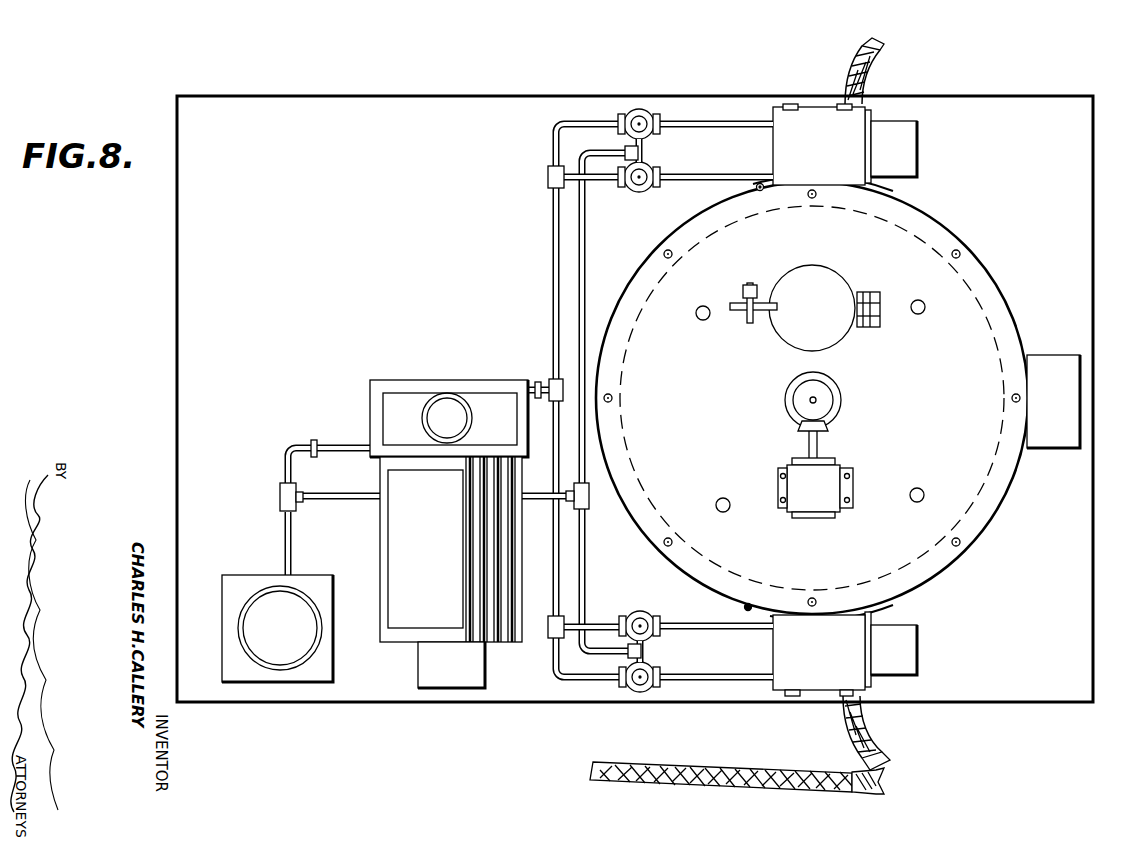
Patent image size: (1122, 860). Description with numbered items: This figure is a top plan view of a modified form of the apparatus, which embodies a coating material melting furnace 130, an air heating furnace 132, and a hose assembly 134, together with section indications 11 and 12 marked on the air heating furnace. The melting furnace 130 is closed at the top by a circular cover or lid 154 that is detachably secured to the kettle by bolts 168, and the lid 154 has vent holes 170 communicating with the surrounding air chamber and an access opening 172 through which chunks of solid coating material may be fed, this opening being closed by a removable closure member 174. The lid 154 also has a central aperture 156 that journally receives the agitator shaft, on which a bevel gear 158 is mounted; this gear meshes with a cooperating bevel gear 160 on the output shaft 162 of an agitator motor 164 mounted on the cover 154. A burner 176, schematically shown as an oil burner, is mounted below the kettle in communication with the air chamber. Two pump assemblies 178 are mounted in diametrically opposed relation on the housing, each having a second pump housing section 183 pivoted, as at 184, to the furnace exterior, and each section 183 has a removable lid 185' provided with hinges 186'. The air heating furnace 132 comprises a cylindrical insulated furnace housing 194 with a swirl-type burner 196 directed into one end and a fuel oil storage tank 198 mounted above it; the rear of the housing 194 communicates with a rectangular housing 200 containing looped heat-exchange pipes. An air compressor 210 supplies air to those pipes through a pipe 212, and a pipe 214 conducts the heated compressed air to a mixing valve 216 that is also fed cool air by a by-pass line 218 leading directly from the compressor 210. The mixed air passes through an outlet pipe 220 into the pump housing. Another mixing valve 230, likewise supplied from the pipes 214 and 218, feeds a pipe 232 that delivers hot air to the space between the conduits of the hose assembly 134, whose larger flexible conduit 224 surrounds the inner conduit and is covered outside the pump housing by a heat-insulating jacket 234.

The coating material melting furnace 130 is at (996, 180).
The cover or lid 154 is at (955, 296).
The bolts 168 is at (960, 252).
The vent holes 170 is at (704, 306).
The access opening 172 is at (840, 278).
The removable closure member 174 is at (793, 278).
The bevel gear 158 is at (830, 380).
The central aperture 156 is at (816, 400).
The bevel gear 160 is at (828, 428).
The output shaft 162 is at (808, 446).
The agitator motor 164 is at (822, 485).
The burner 176 is at (1043, 362).
The pump assembly 178 is at (884, 120).
The second pump housing section 183 is at (773, 142).
The pivot 184 is at (760, 175).
The removable lid 185' is at (785, 413).
The hinges 186' is at (811, 380).
The hose assembly 134 is at (882, 80).
The jacket 234 is at (868, 726).
The larger flexible conduit 224 is at (884, 782).
The outlet pipe 220 is at (724, 618).
The pipe 214 is at (560, 549).
The by-pass line 218 is at (580, 520).
The mixing valve 216 is at (644, 612).
The mixing valve 230 is at (636, 690).
The pipe 232 is at (726, 680).
The pipe 212 is at (284, 538).
The rectangular housing 200 is at (446, 380).
The air heating furnace 132 is at (392, 376).
The furnace housing 194 is at (380, 520).
The fuel oil storage tank 198 is at (405, 548).
The burner 196 is at (428, 665).
The air compressor 210 is at (228, 606).
The section line 11 is at (537, 348).
The section line 12 is at (343, 374).